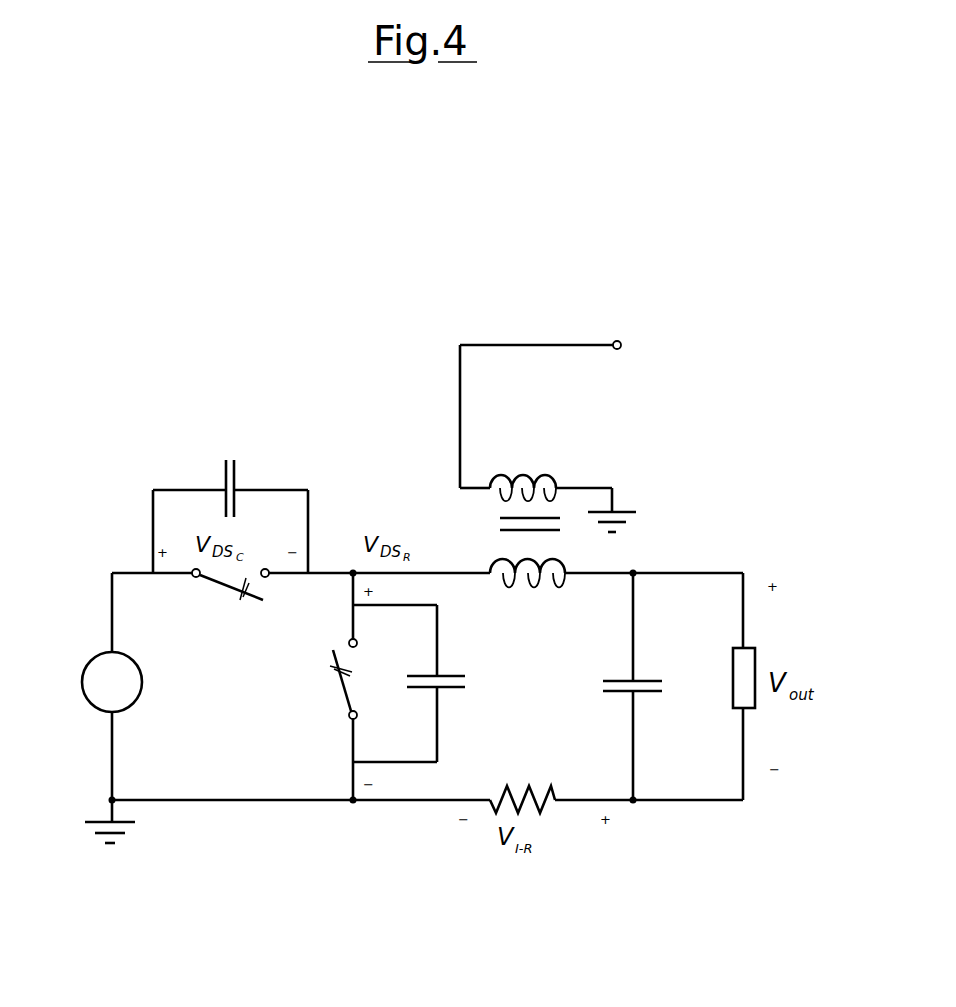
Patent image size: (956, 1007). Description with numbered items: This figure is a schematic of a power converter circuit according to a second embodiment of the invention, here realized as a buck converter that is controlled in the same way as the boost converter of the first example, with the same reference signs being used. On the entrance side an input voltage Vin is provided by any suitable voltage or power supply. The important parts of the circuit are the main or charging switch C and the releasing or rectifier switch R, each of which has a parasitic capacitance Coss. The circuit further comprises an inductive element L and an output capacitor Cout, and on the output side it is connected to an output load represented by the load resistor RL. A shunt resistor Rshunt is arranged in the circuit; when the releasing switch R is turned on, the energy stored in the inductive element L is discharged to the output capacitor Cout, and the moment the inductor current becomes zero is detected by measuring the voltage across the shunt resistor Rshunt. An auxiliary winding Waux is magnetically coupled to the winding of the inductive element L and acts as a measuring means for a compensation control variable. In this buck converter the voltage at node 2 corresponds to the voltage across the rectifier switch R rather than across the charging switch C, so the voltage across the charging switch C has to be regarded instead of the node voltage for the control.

The node 2 is at (411, 589).
The releasing or rectifier switch R is at (347, 566).
The main or charging switch C is at (230, 603).
The parasitic capacitance Coss is at (230, 513).
The inductive element L is at (527, 589).
The output capacitor Cout is at (605, 686).
The load resistor RL is at (717, 678).
The shunt resistor Rshunt is at (525, 782).
The auxiliary winding Waux is at (570, 436).
The input voltage Vin is at (91, 682).